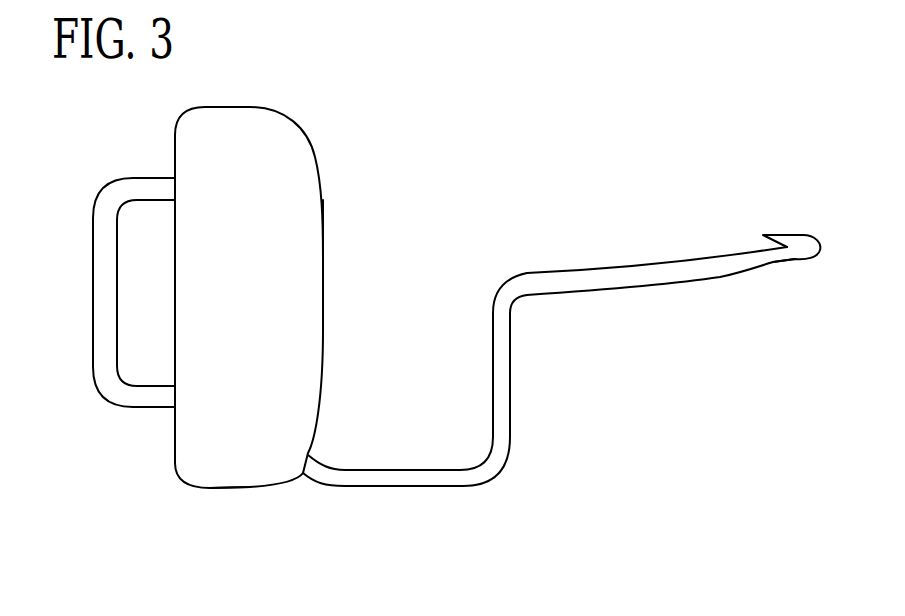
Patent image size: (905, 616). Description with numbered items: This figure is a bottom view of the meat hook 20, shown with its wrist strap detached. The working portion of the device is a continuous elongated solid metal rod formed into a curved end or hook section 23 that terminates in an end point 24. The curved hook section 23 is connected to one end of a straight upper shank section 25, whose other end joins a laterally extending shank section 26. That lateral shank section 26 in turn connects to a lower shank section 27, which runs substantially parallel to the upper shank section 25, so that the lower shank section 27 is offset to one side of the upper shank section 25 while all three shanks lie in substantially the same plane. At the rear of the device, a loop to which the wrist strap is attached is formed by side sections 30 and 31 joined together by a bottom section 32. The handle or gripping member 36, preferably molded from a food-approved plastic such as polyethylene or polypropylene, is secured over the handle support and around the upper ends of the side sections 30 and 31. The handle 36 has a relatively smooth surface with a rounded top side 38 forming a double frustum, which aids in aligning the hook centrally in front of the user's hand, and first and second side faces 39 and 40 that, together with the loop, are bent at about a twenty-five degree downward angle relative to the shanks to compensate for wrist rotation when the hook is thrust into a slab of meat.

The meat hook 20 is at (493, 150).
The curved end or hook section 23 is at (783, 253).
The end point 24 is at (790, 235).
The upper shank section 25 is at (620, 267).
The laterally extending shank section 26 is at (503, 383).
The lower shank section 27 is at (367, 467).
The side section 30 is at (155, 177).
The side section 31 is at (153, 408).
The bottom section 32 is at (93, 332).
The handle or gripping member 36 is at (282, 168).
The rounded top side 38 is at (322, 203).
The first side face 39 is at (238, 492).
The second side face 40 is at (243, 105).